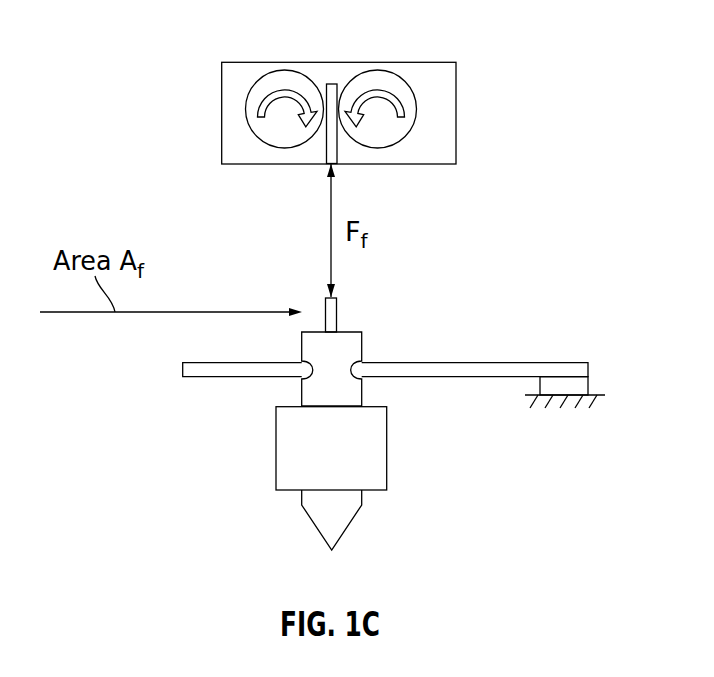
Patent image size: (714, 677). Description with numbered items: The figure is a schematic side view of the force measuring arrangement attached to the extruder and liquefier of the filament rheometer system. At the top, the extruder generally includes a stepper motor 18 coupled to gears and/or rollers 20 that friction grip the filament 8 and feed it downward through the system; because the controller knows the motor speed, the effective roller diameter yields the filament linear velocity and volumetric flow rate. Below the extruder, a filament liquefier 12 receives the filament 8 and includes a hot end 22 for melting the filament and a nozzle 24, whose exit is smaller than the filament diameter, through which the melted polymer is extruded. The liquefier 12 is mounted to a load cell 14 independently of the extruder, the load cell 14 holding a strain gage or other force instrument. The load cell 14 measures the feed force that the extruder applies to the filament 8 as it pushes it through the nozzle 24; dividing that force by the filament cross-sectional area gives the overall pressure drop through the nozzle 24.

The filament 8 is at (329, 84).
The filament liquefier 12 is at (362, 345).
The load cell 14 is at (588, 383).
The stepper motor 18 is at (456, 112).
The gears and/or rollers 20 is at (387, 72).
The hot end 22 is at (387, 448).
The nozzle 24 is at (347, 525).